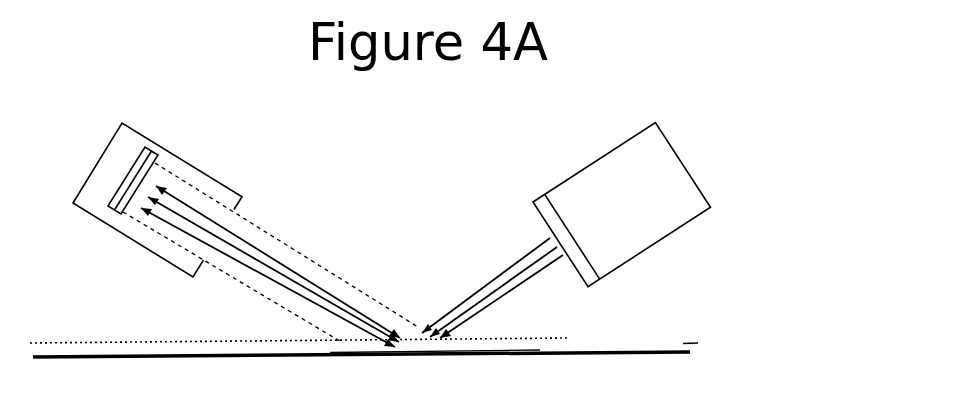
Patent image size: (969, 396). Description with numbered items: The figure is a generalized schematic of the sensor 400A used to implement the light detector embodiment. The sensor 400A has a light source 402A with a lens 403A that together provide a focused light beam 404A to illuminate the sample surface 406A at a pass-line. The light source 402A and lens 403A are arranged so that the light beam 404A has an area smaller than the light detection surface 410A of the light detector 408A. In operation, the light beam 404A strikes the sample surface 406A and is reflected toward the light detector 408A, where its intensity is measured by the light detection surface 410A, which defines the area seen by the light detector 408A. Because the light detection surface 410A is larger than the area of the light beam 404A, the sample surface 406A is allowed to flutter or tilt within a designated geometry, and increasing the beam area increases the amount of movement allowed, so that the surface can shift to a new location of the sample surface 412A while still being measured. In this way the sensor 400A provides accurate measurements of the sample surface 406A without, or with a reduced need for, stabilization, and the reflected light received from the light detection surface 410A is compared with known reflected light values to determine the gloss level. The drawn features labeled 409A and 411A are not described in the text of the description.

The sensor 400A is at (698, 80).
The light source 402A is at (607, 160).
The lens 403A is at (540, 202).
The light beam 404A is at (478, 267).
The sample surface 406A is at (537, 340).
The light detector 408A is at (212, 178).
The detector aperture 409A is at (168, 157).
The light detection surface 410A is at (147, 150).
The reflected light beams 411A is at (270, 214).
The new location of sample surface 412A is at (588, 347).